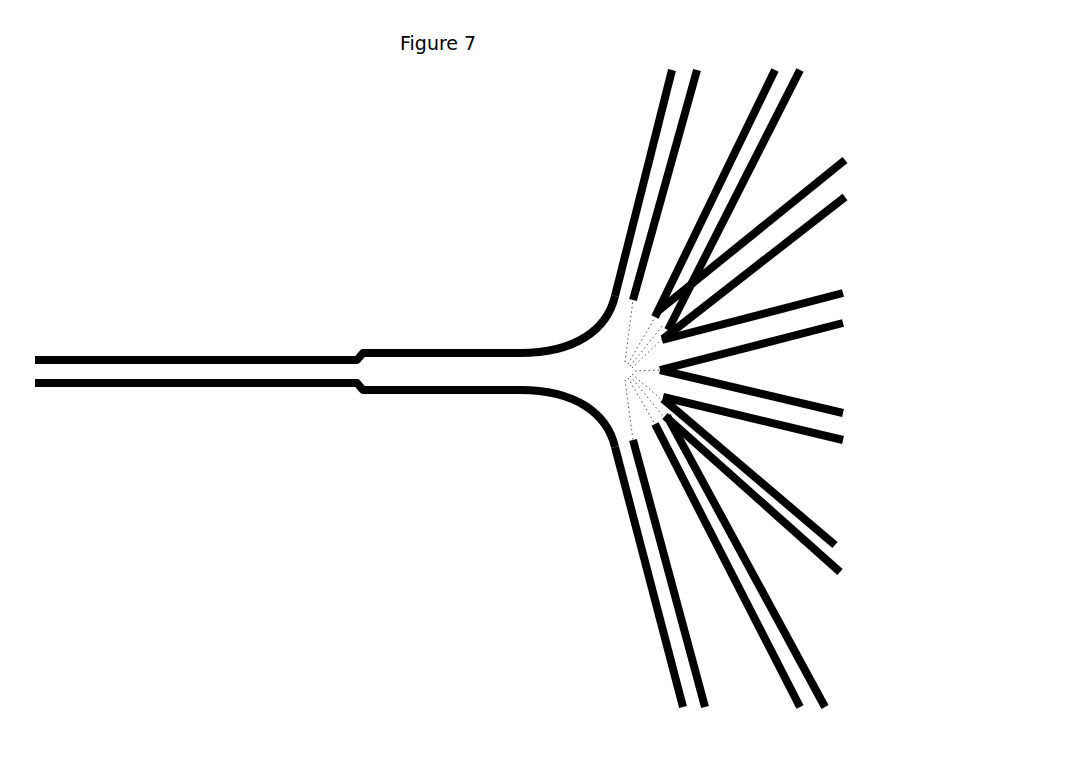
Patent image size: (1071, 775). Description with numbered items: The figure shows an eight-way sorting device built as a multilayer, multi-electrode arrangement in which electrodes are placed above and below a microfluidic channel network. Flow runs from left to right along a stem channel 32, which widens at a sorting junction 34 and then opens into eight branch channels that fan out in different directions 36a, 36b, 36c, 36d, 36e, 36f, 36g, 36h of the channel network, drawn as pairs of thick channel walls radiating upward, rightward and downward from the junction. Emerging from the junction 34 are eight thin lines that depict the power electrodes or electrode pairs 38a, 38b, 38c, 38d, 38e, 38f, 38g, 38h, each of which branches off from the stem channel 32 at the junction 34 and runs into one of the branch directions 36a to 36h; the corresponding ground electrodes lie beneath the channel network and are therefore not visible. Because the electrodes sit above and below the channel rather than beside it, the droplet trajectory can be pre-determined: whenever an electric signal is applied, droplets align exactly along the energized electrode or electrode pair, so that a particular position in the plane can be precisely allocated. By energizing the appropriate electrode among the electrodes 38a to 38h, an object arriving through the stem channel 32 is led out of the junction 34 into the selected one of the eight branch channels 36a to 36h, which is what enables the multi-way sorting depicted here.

The stem channel 32 is at (243, 356).
The junction 34 is at (565, 362).
The direction of the microfluidic channel network 36a is at (647, 167).
The direction of the microfluidic channel network 36b is at (777, 125).
The direction of the microfluidic channel network 36c is at (827, 190).
The direction of the microfluidic channel network 36d is at (828, 310).
The direction of the microfluidic channel network 36e is at (842, 427).
The direction of the microfluidic channel network 36f is at (845, 553).
The direction of the microfluidic channel network 36g is at (797, 682).
The direction of the microfluidic channel network 36h is at (683, 672).
The electrode or electrode pair 38a is at (628, 233).
The electrode or electrode pair 38b is at (638, 315).
The electrode or electrode pair 38c is at (710, 307).
The electrode or electrode pair 38d is at (673, 353).
The electrode or electrode pair 38e is at (673, 385).
The electrode or electrode pair 38f is at (735, 458).
The electrode or electrode pair 38g is at (663, 457).
The electrode or electrode pair 38h is at (635, 437).